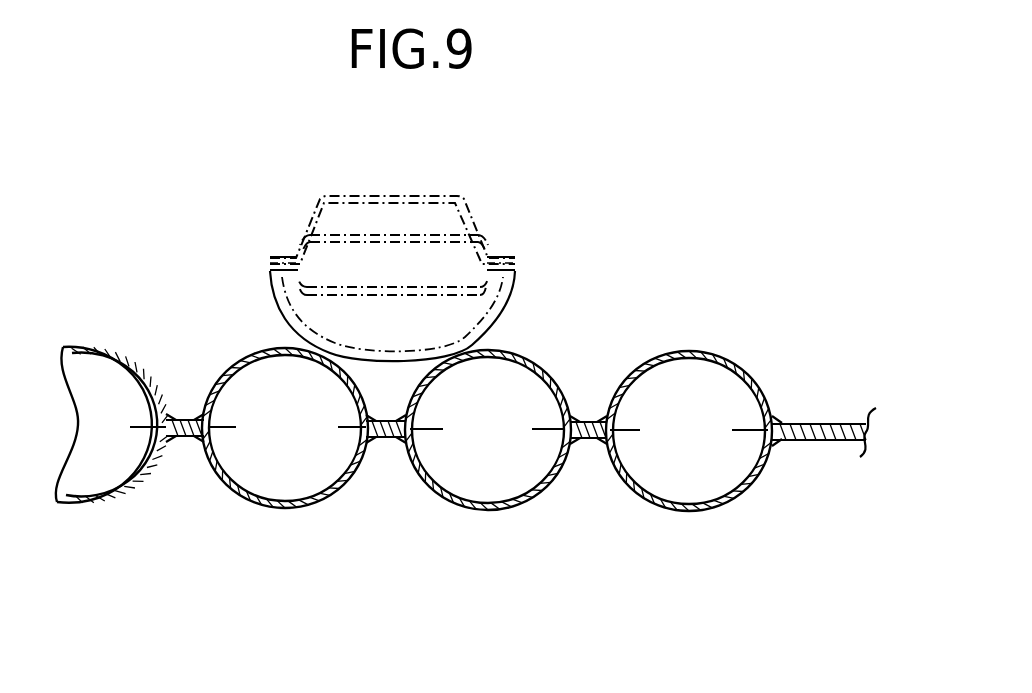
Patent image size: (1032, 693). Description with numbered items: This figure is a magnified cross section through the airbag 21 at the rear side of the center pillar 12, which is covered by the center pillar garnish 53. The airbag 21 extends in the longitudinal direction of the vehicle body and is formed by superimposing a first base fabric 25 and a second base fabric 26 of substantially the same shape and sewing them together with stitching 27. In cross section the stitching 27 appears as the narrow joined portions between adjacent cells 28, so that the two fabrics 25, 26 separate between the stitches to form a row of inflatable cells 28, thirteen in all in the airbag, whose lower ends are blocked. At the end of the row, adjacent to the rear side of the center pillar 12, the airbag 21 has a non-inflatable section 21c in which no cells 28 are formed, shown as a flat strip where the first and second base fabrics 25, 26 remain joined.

The center pillar 12 is at (487, 235).
The center pillar garnish 53 is at (503, 312).
The airbag 21 is at (466, 470).
The non-inflatable section 21c is at (808, 424).
The first base fabric 25 is at (690, 512).
The second base fabric 26 is at (695, 352).
The stitching 27 is at (171, 438).
The cells 28 is at (122, 443).